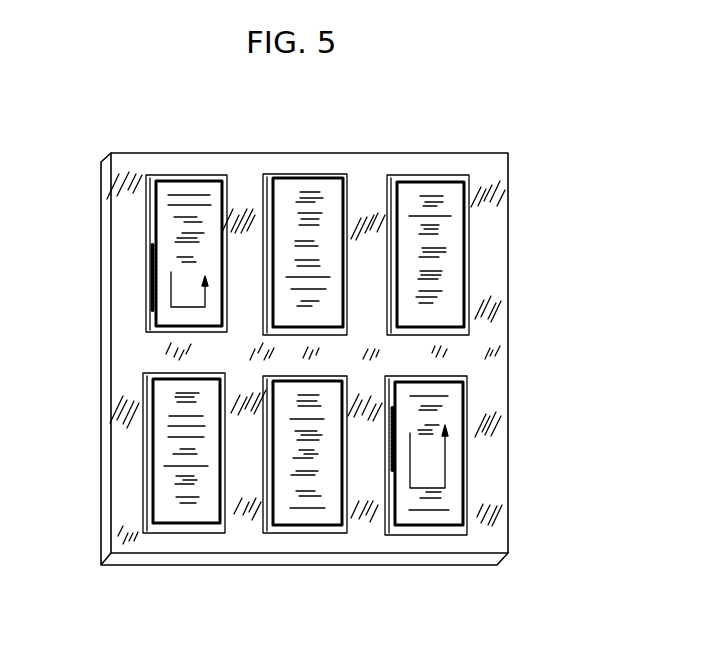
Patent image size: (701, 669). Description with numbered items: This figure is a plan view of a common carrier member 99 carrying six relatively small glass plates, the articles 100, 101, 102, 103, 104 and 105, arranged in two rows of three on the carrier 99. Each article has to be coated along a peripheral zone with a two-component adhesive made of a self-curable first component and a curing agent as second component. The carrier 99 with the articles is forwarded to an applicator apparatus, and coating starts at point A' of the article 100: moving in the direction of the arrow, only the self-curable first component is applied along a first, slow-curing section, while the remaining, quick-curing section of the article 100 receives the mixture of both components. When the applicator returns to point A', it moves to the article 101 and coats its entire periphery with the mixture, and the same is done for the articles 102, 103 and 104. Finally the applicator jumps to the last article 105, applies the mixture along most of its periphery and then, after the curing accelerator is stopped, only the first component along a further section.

The carrier member 99 is at (493, 167).
The article 100 is at (188, 190).
The article 101 is at (308, 197).
The article 102 is at (428, 198).
The article 103 is at (187, 507).
The article 104 is at (303, 510).
The article 105 is at (428, 510).
The starting point A' is at (97, 250).